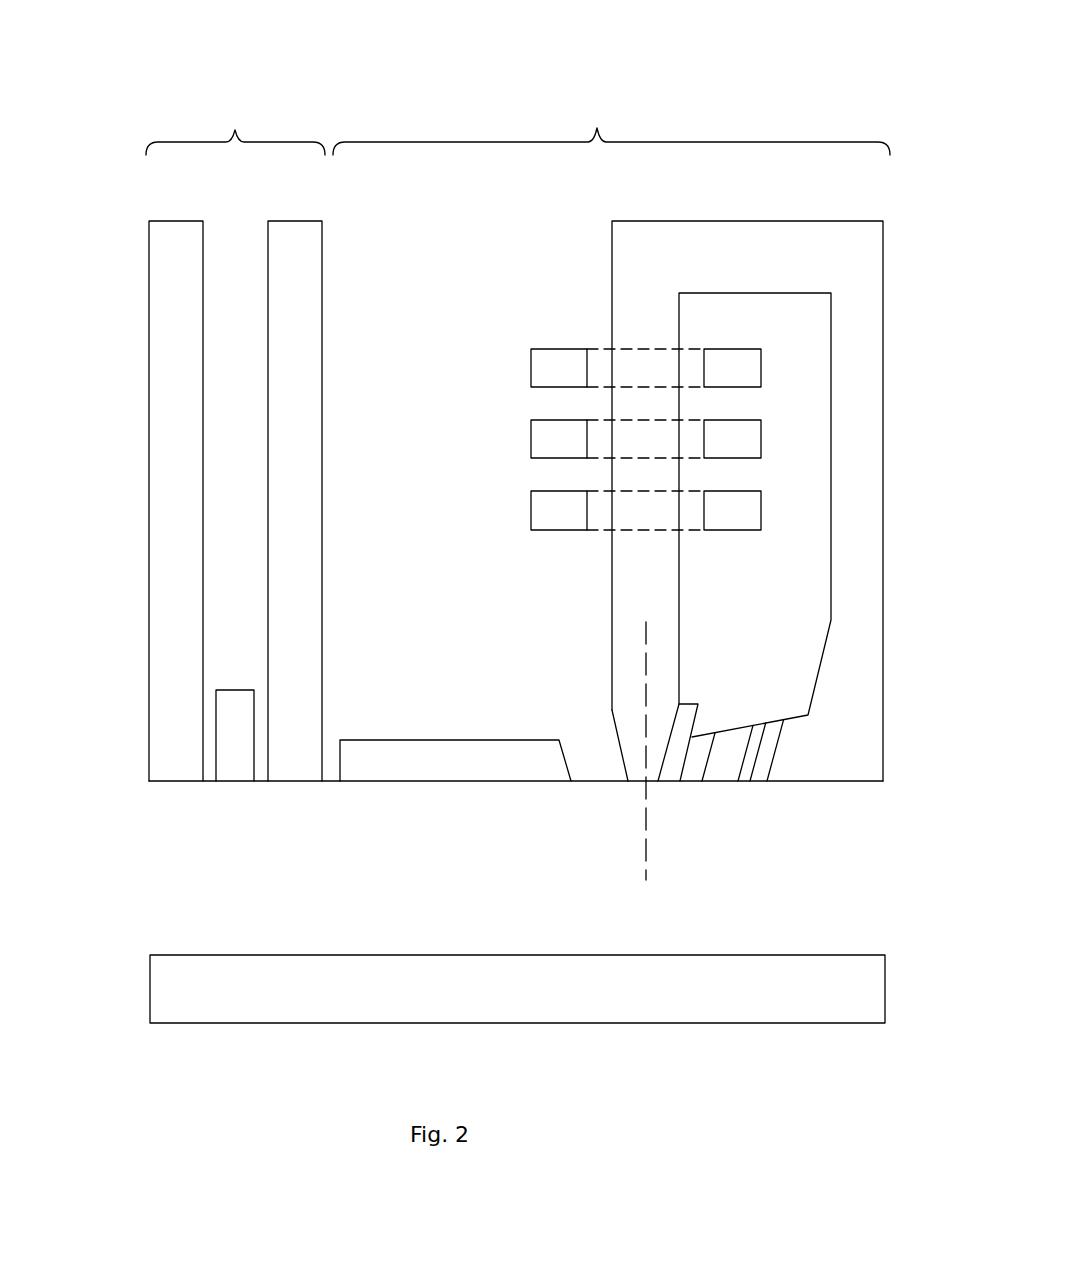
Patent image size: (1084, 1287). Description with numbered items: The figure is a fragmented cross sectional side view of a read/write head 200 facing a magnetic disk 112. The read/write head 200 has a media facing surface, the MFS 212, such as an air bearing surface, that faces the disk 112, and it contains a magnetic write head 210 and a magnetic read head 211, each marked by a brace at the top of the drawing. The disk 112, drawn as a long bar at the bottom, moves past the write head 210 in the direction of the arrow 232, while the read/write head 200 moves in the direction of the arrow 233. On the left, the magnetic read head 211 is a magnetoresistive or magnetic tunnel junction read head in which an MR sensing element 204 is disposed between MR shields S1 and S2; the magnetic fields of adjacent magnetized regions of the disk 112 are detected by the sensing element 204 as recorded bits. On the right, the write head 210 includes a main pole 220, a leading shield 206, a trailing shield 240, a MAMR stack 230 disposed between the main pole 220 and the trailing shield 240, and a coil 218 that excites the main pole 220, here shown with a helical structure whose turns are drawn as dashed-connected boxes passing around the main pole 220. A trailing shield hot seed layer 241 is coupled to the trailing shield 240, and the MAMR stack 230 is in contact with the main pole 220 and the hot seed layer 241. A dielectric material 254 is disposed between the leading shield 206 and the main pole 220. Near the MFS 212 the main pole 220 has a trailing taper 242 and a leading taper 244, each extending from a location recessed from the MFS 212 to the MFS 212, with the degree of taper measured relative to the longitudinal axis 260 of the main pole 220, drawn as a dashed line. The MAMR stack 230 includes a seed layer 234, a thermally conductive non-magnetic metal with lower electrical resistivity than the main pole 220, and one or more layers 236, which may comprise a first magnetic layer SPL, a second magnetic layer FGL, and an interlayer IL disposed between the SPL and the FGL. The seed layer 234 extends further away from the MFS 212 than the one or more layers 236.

The read/write head 200 is at (150, 52).
The magnetic read head 211 is at (235, 127).
The magnetic write head 210 is at (611, 440).
The MR shield S1 is at (171, 783).
The MR shield S2 is at (276, 783).
The MR sensing element 204 is at (228, 783).
The leading shield 206 is at (370, 783).
The MFS 212 is at (873, 782).
The arrow 233 is at (52, 413).
The coil 218 is at (557, 531).
The main pole 220 is at (668, 578).
The trailing shield 240 is at (873, 703).
The trailing taper 242 is at (672, 720).
The leading taper 244 is at (615, 725).
The longitudinal axis 260 is at (645, 860).
The seed layer 234 is at (673, 755).
The spin polarization layer SPL is at (703, 740).
The interlayer IL is at (727, 730).
The field generation layer FGL is at (755, 727).
The one or more layers 236 is at (720, 765).
The trailing shield hot seed layer 241 is at (768, 748).
The MAMR stack 230 is at (707, 787).
The dielectric material 254 is at (603, 768).
The arrow 232 is at (810, 932).
The magnetic disk 112 is at (872, 990).